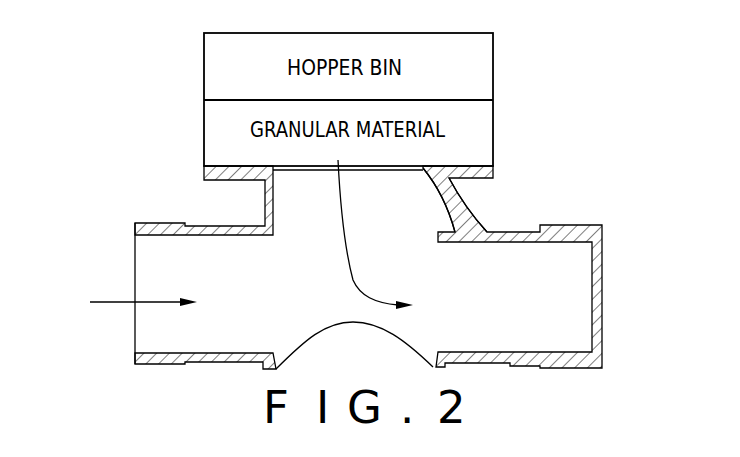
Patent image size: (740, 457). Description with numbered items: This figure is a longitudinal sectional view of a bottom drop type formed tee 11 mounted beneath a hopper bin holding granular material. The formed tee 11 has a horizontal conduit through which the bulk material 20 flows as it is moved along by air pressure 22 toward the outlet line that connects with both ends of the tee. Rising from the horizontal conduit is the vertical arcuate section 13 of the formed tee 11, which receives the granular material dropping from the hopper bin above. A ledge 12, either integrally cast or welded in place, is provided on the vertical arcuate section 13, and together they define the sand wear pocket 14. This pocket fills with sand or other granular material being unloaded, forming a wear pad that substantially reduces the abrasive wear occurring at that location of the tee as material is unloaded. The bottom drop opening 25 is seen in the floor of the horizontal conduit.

The formed tee 11 is at (174, 203).
The ledge 12 is at (448, 240).
The vertical arcuate section 13 is at (437, 192).
The sand wear pocket 14 is at (463, 225).
The bulk material 20 is at (338, 219).
The air pressure 22 is at (109, 302).
The bottom drop opening 25 is at (313, 340).